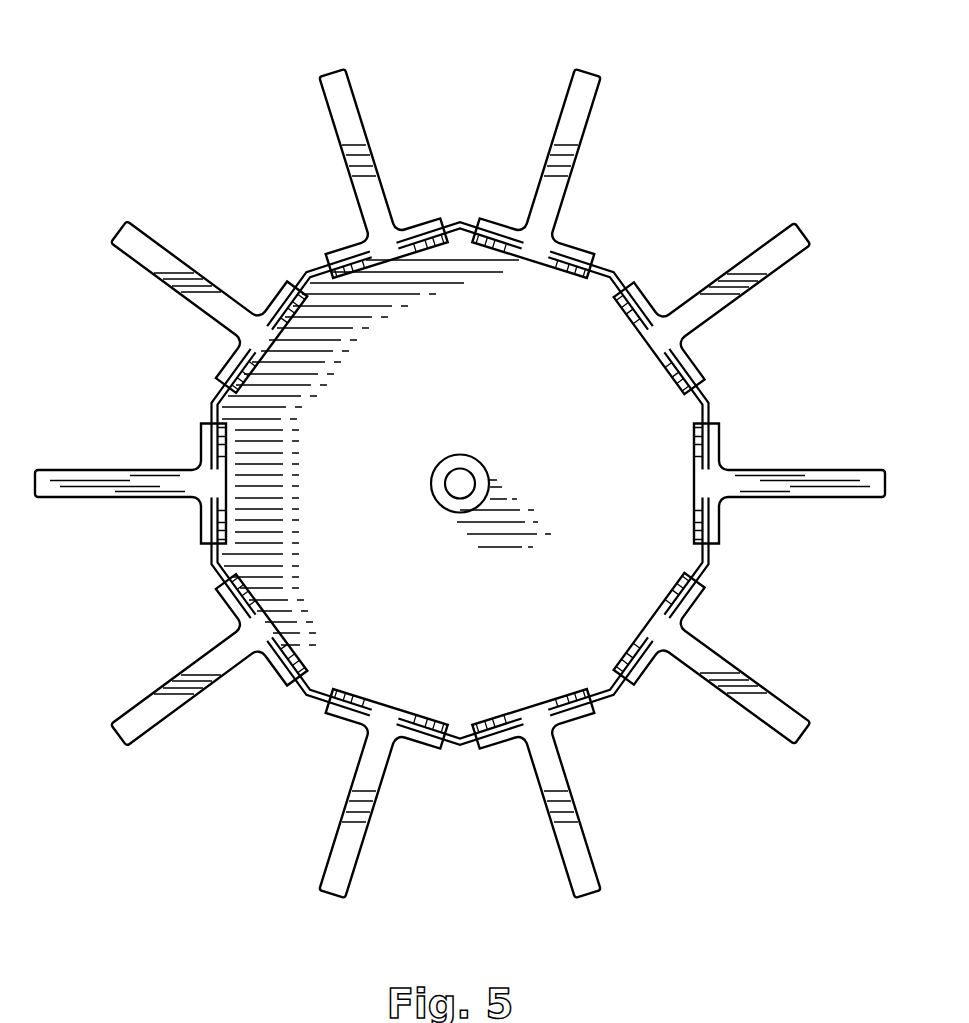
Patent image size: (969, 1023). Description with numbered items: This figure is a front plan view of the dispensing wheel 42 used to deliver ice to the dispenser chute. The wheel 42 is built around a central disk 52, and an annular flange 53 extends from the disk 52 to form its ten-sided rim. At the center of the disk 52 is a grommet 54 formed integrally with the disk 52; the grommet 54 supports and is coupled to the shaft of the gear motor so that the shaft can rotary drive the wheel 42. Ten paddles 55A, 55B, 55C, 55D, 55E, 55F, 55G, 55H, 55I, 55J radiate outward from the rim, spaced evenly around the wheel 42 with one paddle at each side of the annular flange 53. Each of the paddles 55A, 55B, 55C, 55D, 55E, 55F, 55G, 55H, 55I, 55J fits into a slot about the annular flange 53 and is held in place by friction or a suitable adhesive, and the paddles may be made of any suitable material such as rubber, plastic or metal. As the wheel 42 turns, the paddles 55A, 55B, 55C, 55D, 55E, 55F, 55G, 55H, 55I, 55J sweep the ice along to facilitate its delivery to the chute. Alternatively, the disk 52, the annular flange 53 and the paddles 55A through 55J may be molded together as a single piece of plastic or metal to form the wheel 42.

The dispensing wheel 42 is at (770, 100).
The disk 52 is at (479, 649).
The annular flange 53 is at (711, 404).
The grommet 54 is at (461, 454).
The paddle 55A is at (598, 68).
The paddle 55B is at (800, 234).
The paddle 55C is at (872, 503).
The paddle 55D is at (803, 748).
The paddle 55E is at (590, 897).
The paddle 55F is at (331, 896).
The paddle 55G is at (117, 738).
The paddle 55H is at (55, 469).
The paddle 55I is at (134, 228).
The paddle 55J is at (331, 69).